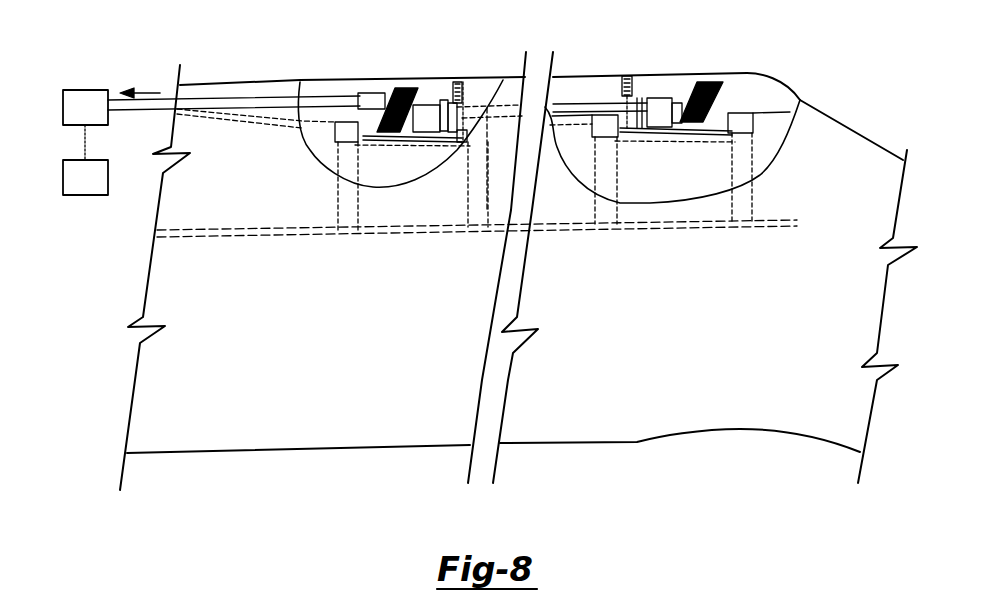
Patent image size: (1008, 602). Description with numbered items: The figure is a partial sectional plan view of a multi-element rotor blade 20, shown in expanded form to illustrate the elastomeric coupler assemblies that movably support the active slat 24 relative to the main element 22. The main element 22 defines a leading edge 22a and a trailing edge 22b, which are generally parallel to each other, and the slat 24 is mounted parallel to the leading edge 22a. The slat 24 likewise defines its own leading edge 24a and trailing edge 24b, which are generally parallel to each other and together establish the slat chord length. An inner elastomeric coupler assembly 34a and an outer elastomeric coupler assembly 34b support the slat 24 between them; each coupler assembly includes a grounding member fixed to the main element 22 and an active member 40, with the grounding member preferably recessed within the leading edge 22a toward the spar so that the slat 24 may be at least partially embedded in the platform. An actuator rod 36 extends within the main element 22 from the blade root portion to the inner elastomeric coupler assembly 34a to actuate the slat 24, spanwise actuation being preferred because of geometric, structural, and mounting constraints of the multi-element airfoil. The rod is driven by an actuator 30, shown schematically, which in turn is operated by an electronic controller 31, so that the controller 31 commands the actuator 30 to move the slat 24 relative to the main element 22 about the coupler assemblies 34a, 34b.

The multi-element rotor blade 20 is at (837, 57).
The main element 22 is at (840, 147).
The leading edge 22a is at (433, 80).
The trailing edge 22b is at (641, 443).
The active slat 24 is at (607, 87).
The leading edge 24a is at (507, 80).
The trailing edge 24b is at (551, 122).
The actuator 30 is at (94, 120).
The electronic controller 31 is at (94, 190).
The inner elastomeric coupler assembly 34a is at (398, 70).
The outer elastomeric coupler assembly 34b is at (690, 67).
The actuator rod 36 is at (252, 96).
The active member 40 is at (681, 184).